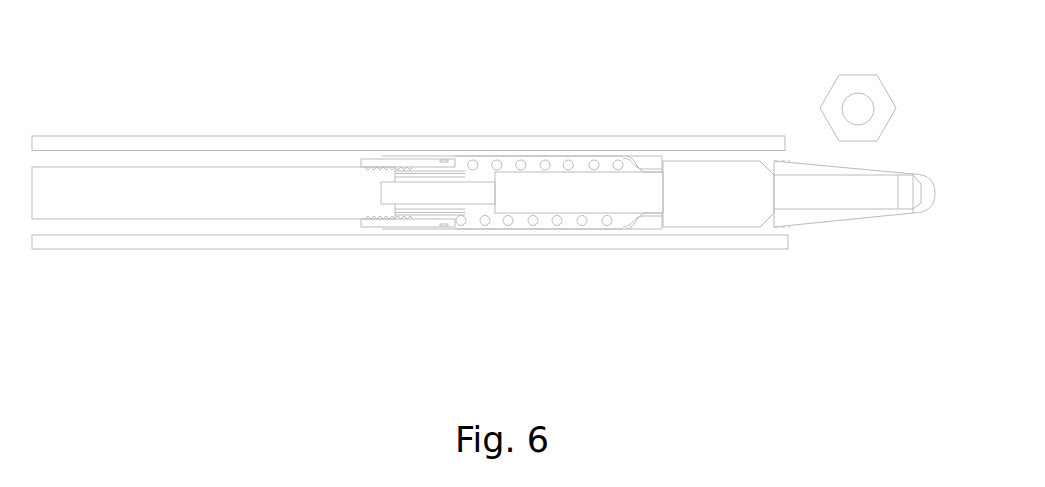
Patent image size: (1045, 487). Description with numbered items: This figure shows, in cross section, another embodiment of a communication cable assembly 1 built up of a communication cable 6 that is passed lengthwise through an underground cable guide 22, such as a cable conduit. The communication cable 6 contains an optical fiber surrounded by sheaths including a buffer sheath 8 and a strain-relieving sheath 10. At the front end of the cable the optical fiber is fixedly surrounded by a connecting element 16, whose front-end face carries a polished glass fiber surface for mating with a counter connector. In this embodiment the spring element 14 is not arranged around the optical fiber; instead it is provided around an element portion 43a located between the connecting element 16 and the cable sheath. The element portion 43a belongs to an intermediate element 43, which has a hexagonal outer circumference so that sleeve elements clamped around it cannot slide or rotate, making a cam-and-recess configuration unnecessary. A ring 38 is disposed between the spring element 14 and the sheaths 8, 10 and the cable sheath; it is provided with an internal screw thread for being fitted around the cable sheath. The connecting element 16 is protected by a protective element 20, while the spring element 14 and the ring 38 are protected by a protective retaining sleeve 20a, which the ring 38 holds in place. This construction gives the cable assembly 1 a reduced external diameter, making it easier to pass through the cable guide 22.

The communication cable assembly 1 is at (213, 135).
The communication cable 6 is at (224, 193).
The cable guide 22 is at (135, 145).
The ring 38 is at (417, 160).
The strain-relieving sheath 10 is at (424, 210).
The buffer sheath 8 is at (480, 192).
The spring element 14 is at (567, 162).
The element portion 43a is at (607, 185).
The intermediate element 43 is at (722, 185).
The connecting element 16 is at (838, 193).
The protective element 20 is at (920, 185).
The protective retaining sleeve 20a is at (490, 228).